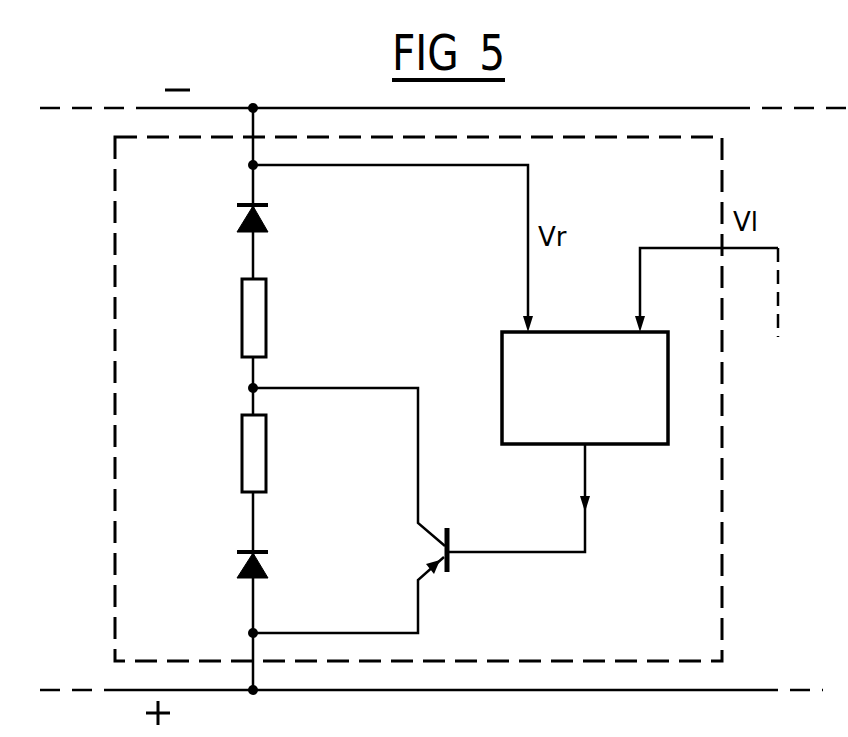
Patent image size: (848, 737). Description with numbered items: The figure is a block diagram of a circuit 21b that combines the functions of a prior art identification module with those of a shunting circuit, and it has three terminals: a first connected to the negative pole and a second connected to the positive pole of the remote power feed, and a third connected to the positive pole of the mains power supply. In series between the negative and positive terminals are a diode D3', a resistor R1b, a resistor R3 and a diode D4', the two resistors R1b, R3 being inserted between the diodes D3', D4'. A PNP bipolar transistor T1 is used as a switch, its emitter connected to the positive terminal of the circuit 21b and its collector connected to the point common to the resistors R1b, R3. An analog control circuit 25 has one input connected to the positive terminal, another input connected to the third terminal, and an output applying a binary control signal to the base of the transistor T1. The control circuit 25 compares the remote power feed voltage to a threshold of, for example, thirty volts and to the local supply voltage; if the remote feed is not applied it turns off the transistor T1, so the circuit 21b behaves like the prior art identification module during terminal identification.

The circuit 21b is at (722, 178).
The analog control circuit 25 is at (587, 332).
The diode D3' is at (290, 221).
The resistor R1b is at (266, 318).
The resistor R3 is at (266, 452).
The diode D4' is at (297, 556).
The PNP bipolar transistor T1 is at (450, 534).